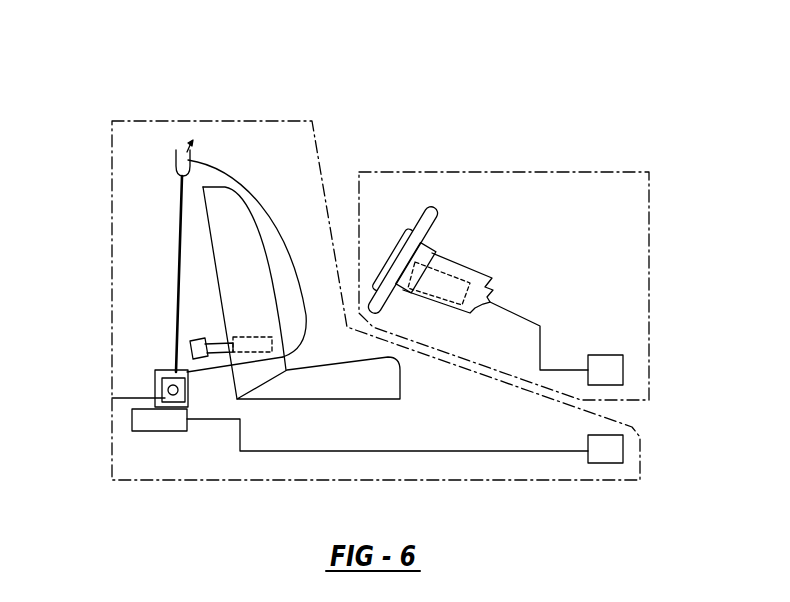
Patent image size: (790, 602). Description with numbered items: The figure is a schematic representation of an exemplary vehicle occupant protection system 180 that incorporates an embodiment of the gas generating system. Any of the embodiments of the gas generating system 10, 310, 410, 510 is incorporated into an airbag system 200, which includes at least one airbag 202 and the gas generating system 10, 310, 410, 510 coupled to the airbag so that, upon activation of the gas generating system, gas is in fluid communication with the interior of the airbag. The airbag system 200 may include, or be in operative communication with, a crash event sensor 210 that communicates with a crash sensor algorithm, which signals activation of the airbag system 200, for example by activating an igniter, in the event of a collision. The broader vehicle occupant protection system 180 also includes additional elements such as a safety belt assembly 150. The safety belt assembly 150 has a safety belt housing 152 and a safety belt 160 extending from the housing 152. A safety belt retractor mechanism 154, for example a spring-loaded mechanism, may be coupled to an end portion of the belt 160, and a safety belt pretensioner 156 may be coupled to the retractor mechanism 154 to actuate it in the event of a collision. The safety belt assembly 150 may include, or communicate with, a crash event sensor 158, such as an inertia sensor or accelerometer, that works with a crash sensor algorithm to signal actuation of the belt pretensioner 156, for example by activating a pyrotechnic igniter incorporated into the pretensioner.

The safety belt assembly 150 is at (212, 122).
The safety belt housing 152 is at (114, 398).
The safety belt retractor mechanism 154 is at (155, 370).
The safety belt pretensioner 156 is at (153, 431).
The crash event sensor 158 is at (603, 463).
The safety belt 160 is at (220, 166).
The vehicle occupant protection system 180 is at (432, 110).
The airbag system 200 is at (602, 173).
The airbag 202 is at (419, 248).
The crash event sensor 210 is at (605, 355).
The gas generating system 10 is at (516, 280).
The gas generating system 310 is at (516, 280).
The gas generating system 410 is at (516, 280).
The gas generating system 510 is at (455, 266).